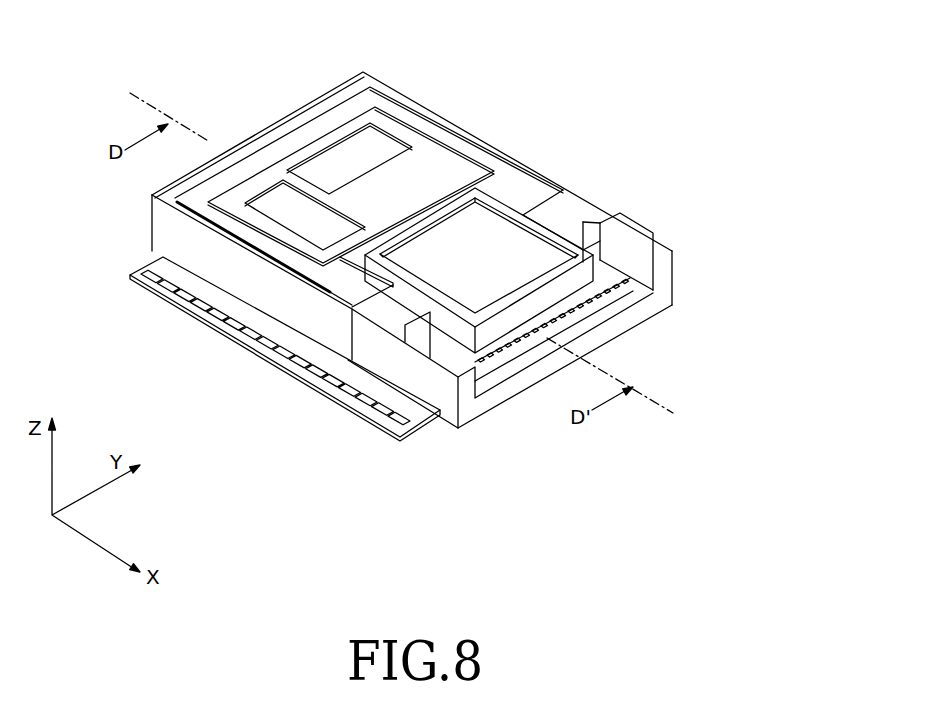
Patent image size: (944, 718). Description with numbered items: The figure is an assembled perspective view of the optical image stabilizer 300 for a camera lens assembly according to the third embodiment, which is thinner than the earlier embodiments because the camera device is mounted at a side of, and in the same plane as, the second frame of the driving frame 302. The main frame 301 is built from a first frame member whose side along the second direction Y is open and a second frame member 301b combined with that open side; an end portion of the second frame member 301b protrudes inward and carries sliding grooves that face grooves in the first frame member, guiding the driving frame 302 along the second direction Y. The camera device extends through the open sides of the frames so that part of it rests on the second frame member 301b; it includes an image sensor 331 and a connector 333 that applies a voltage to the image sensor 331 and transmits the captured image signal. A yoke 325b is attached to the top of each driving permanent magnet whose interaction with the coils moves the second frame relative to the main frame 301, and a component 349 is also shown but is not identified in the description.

The optical image stabilizer 300 is at (677, 33).
The main frame 301 is at (153, 235).
The second frame member 301b is at (574, 211).
The driving frame 302 is at (470, 157).
The yoke 325b is at (278, 197).
The image sensor 331 is at (487, 291).
The connector 333 is at (585, 302).
The flexible cable 349 is at (268, 350).